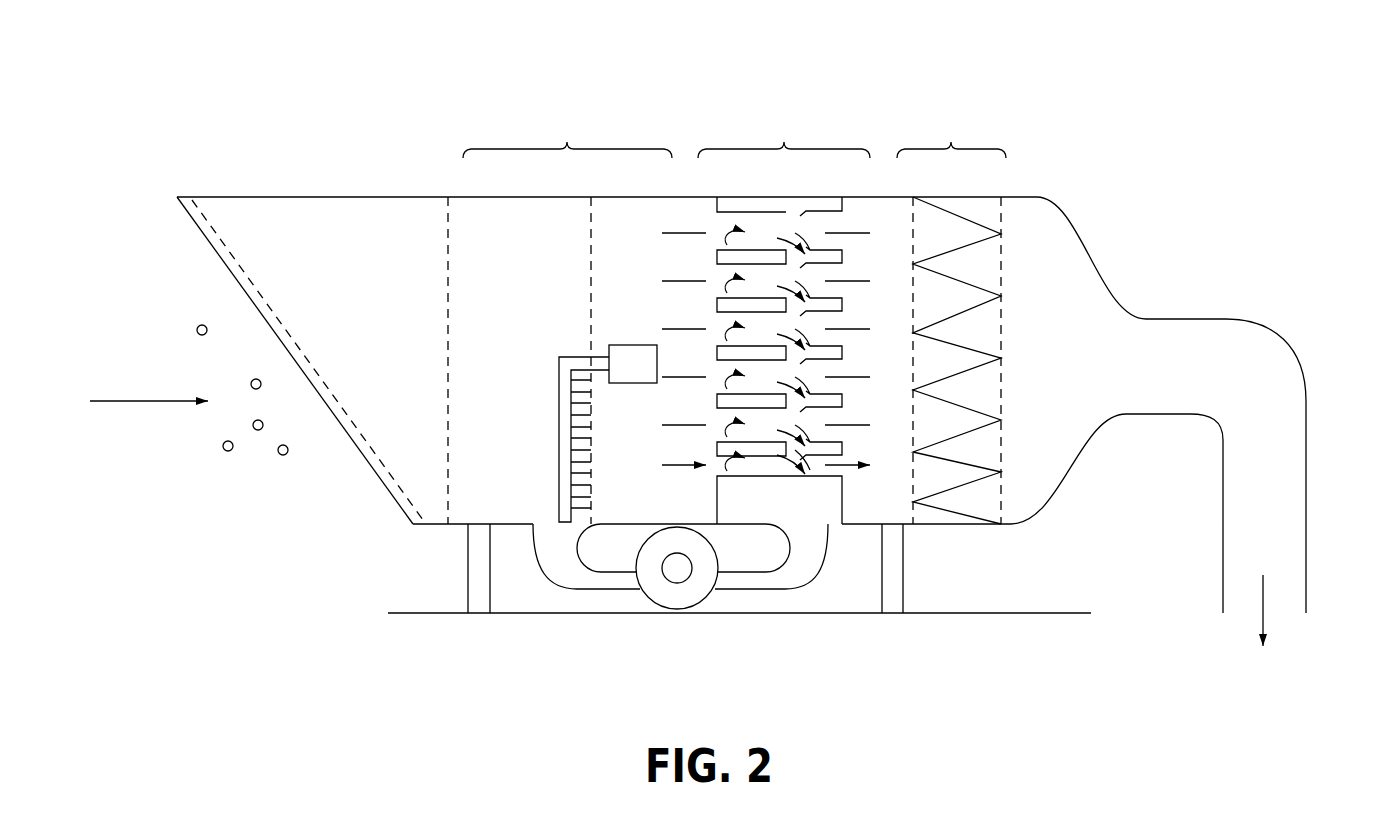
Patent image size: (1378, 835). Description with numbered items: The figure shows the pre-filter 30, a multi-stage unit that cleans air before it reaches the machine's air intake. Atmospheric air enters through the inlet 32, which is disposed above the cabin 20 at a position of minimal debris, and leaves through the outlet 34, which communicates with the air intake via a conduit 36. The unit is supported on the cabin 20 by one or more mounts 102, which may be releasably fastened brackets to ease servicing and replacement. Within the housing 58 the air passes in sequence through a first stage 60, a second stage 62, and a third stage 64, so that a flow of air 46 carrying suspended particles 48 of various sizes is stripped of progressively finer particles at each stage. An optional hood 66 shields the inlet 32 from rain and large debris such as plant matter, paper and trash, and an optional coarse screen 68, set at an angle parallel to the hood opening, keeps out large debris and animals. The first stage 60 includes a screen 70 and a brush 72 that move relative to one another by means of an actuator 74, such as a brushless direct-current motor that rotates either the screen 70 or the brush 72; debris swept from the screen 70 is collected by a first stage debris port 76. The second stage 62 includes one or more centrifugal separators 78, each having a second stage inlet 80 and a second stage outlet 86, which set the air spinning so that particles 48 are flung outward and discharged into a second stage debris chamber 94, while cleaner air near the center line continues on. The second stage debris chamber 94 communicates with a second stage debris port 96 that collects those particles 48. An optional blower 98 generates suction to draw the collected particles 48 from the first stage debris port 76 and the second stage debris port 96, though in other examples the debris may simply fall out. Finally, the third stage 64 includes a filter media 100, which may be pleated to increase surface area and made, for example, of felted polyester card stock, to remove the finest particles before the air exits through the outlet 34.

The cabin 20 is at (1006, 612).
The pre-filter 30 is at (713, 85).
The inlet 32 is at (142, 290).
The outlet 34 is at (1147, 306).
The conduit 36 is at (1307, 541).
The flow of air 46 is at (136, 404).
The particles 48 is at (229, 453).
The housing 58 is at (458, 197).
The first stage 60 is at (567, 131).
The second stage 62 is at (766, 289).
The third stage 64 is at (951, 131).
The hood 66 is at (326, 197).
The coarse screen 68 is at (322, 380).
The screen 70 is at (591, 266).
The brush 72 is at (570, 412).
The actuator 74 is at (618, 345).
The first stage debris port 76 is at (555, 538).
The centrifugal separator 78 is at (758, 207).
The second stage inlet 80 is at (706, 477).
The second stage outlet 86 is at (847, 448).
The second stage debris chamber 94 is at (816, 510).
The second stage debris port 96 is at (795, 535).
The blower 98 is at (690, 595).
The filter media 100 is at (960, 314).
The mounts 102 is at (471, 573).